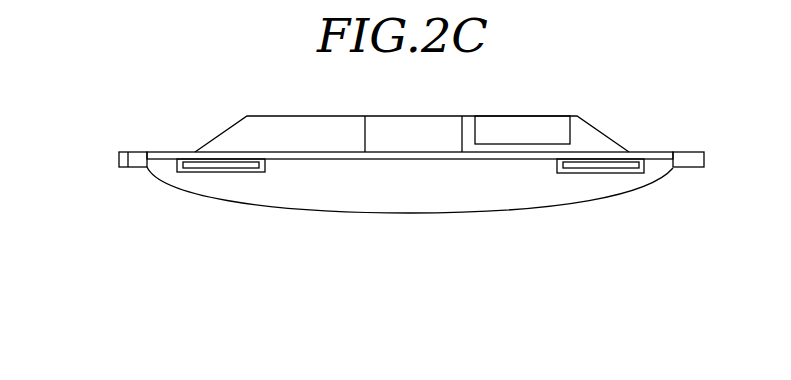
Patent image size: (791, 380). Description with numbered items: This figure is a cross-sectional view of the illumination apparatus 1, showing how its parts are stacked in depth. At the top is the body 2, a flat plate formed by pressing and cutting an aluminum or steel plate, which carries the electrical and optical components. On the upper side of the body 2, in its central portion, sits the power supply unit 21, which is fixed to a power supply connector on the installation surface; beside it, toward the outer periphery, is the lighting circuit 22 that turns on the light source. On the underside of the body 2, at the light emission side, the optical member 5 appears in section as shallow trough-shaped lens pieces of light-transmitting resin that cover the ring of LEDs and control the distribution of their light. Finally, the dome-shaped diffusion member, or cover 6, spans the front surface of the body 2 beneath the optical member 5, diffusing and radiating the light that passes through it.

The illumination apparatus 1 is at (83, 105).
The body 2 is at (608, 135).
The power supply unit 21 is at (422, 128).
The lighting circuit 22 is at (537, 127).
The optical member 5 is at (232, 173).
The diffusion member (cover) 6 is at (517, 209).